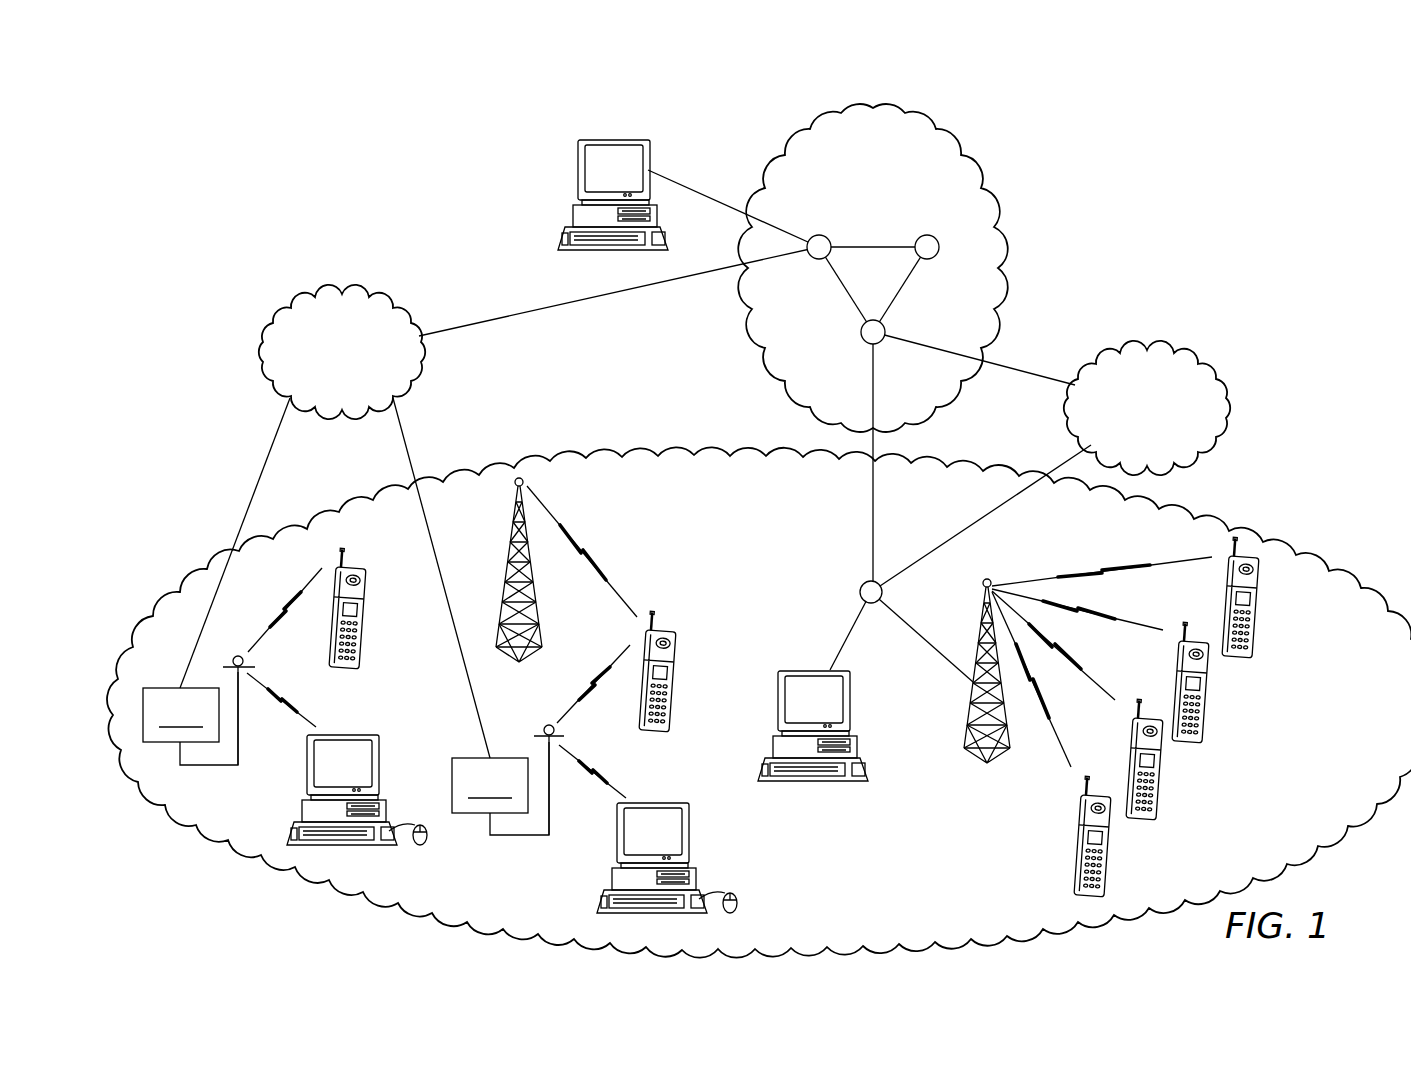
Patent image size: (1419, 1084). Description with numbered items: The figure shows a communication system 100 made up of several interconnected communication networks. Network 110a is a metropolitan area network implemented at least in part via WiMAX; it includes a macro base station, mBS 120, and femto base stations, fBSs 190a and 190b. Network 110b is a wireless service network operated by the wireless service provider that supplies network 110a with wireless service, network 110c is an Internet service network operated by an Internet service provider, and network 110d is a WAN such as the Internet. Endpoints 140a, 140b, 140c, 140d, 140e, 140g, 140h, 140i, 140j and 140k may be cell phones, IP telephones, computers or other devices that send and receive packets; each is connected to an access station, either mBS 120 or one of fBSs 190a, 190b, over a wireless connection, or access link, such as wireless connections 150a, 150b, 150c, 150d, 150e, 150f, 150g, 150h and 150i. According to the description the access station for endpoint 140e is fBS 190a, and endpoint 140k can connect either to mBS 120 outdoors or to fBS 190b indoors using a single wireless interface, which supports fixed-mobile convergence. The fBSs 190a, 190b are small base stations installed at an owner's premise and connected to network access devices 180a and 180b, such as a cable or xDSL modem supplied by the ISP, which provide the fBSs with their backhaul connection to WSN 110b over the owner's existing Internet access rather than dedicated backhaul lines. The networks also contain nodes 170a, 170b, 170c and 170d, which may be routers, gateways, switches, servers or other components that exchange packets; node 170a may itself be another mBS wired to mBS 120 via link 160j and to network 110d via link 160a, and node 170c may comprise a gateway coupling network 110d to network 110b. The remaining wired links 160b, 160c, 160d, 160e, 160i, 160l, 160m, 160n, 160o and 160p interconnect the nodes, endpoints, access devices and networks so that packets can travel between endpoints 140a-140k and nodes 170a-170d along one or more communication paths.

The communication system 100 is at (351, 141).
The MAN network 110a is at (583, 447).
The wireless service network (WSN) 110b is at (1232, 406).
The Internet service network (ISN) 110c is at (262, 334).
The WAN 110d is at (806, 122).
The macro base station (mBS) 120 is at (507, 545).
The endpoint 140a is at (1078, 850).
The endpoint 140b is at (1164, 788).
The endpoint 140c is at (1214, 708).
The endpoint 140d is at (1266, 635).
The endpoint 140e is at (611, 138).
The endpoint 140g is at (858, 748).
The endpoint 140h is at (357, 667).
The endpoint 140i is at (300, 810).
The endpoint 140j is at (612, 880).
The endpoint 140k is at (665, 735).
The wireless connection 150a is at (1060, 742).
The wireless connection 150b is at (1096, 682).
The wireless connection 150c is at (1130, 622).
The wireless connection 150d is at (1073, 575).
The wireless connection 150e is at (596, 680).
The wireless connection 150f is at (592, 772).
The wireless connection 150g is at (283, 612).
The wireless connection 150h is at (285, 703).
The wireless connection 150i is at (601, 573).
The wired link 160a is at (872, 540).
The wired link 160b is at (842, 296).
The wired link 160c is at (907, 292).
The wired link 160d is at (837, 655).
The wired link 160e is at (711, 186).
The wired link 160i is at (881, 245).
The wired link 160j is at (906, 625).
The wired link 160l is at (1021, 373).
The wired link 160m is at (949, 538).
The wired link 160n is at (406, 444).
The wired link 160o is at (617, 290).
The wired link 160p is at (263, 462).
The node 170a is at (860, 589).
The node 170b is at (861, 338).
The node 170c is at (816, 235).
The node 170d is at (931, 235).
The network access device 180a is at (190, 718).
The network access device 180b is at (500, 788).
The femto base station (fBS) 190a is at (246, 662).
The femto base station (fBS) 190b is at (540, 730).